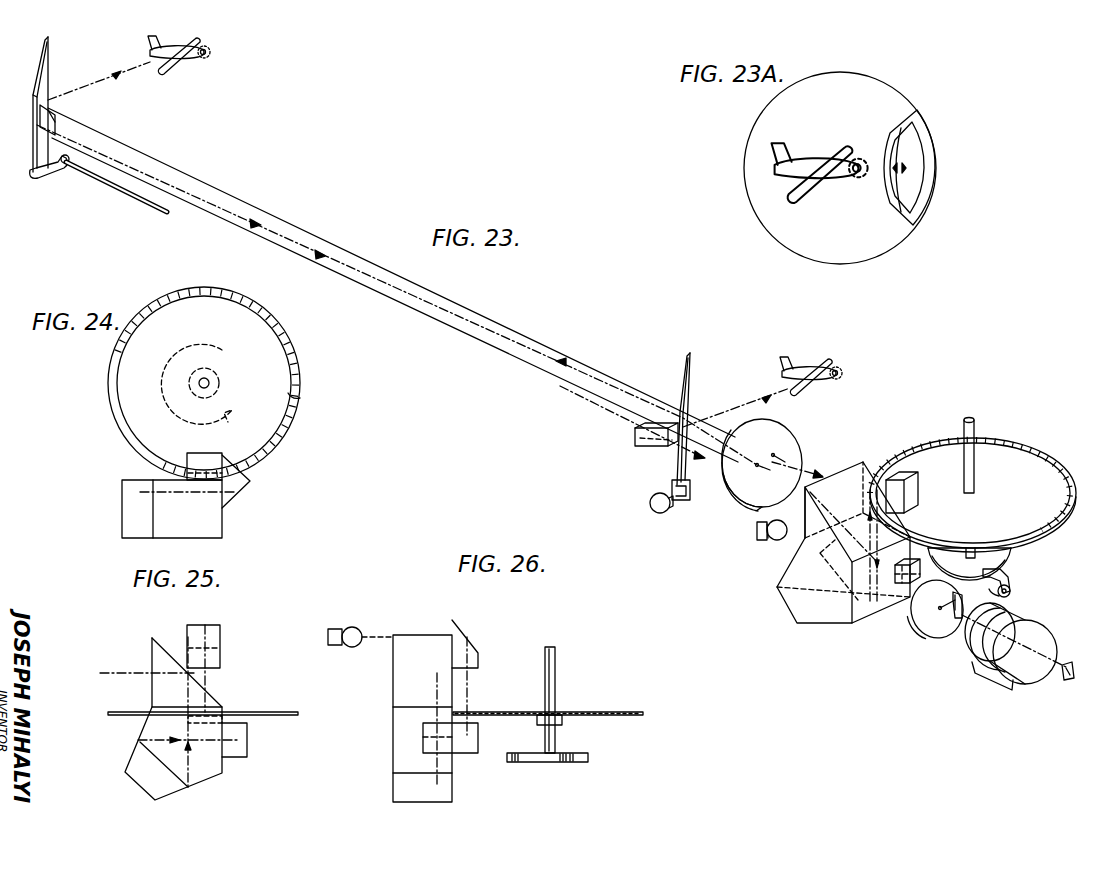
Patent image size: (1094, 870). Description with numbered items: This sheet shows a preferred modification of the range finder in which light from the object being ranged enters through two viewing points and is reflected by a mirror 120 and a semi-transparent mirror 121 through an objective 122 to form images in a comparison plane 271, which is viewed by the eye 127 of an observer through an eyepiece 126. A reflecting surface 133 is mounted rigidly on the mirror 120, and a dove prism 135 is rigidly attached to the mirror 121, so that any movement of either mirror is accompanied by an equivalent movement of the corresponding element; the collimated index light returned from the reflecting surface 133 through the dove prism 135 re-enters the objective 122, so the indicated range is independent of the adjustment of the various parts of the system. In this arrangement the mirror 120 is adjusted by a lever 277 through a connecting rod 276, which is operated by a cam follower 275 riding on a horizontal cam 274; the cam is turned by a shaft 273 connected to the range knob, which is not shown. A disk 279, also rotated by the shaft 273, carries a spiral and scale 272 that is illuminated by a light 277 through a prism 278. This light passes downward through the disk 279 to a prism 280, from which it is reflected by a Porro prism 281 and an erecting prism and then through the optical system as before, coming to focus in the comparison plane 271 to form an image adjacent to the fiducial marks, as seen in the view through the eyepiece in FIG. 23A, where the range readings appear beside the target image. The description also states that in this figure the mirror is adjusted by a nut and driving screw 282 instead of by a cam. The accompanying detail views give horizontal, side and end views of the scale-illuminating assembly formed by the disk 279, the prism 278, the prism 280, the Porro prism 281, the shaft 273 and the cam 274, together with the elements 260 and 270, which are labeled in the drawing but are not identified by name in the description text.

In FIG. 23, the mirror 120 is at (42, 54).
In FIG. 23, the semi-transparent mirror 121 is at (688, 358).
In FIG. 23, the objective 122 is at (790, 440).
In FIG. 23, the eyepiece 126 is at (1006, 653).
In FIG. 23, the eye 127 is at (1064, 682).
In FIG. 23, the reflecting surface 133 is at (60, 118).
In FIG. 23, the dove prism 135 is at (640, 455).
In FIG. 23, the range indicator 260 is at (958, 620).
In FIG. 23A, the range indicator 260 is at (910, 168).
In FIG. 23, the prism 270 is at (848, 466).
In FIG. 24, the prism 270 is at (210, 536).
In FIG. 25, the prism 270 is at (158, 650).
In FIG. 26, the prism 270 is at (400, 686).
In FIG. 23, the comparison plane 271 is at (925, 630).
In FIG. 23A, the comparison plane 271 is at (797, 248).
In FIG. 23, the spiral and scale 272 is at (966, 536).
In FIG. 24, the spiral and scale 272 is at (302, 398).
In FIG. 23, the shaft 273 is at (976, 420).
In FIG. 24, the shaft 273 is at (200, 384).
In FIG. 26, the shaft 273 is at (556, 666).
In FIG. 23, the horizontal cam 274 is at (1005, 548).
In FIG. 24, the horizontal cam 274 is at (228, 348).
In FIG. 26, the horizontal cam 274 is at (585, 752).
In FIG. 23, the cam follower 275 is at (1012, 578).
In FIG. 23, the connecting rod 276 is at (135, 195).
In FIG. 23, the lever 277 is at (52, 174).
In FIG. 26, the lever 277 is at (350, 628).
In FIG. 23, the prism 278 is at (910, 470).
In FIG. 25, the prism 278 is at (220, 637).
In FIG. 26, the prism 278 is at (473, 652).
In FIG. 23, the disk 279 is at (1028, 444).
In FIG. 24, the disk 279 is at (282, 336).
In FIG. 25, the disk 279 is at (288, 702).
In FIG. 26, the disk 279 is at (628, 710).
In FIG. 23, the prism 280 is at (912, 556).
In FIG. 24, the prism 280 is at (187, 470).
In FIG. 25, the prism 280 is at (212, 750).
In FIG. 23, the Porro prism 281 is at (903, 586).
In FIG. 24, the Porro prism 281 is at (250, 484).
In FIG. 25, the Porro prism 281 is at (240, 733).
In FIG. 26, the Porro prism 281 is at (462, 748).
In FIG. 23, the nut and driving screw 282 is at (685, 512).